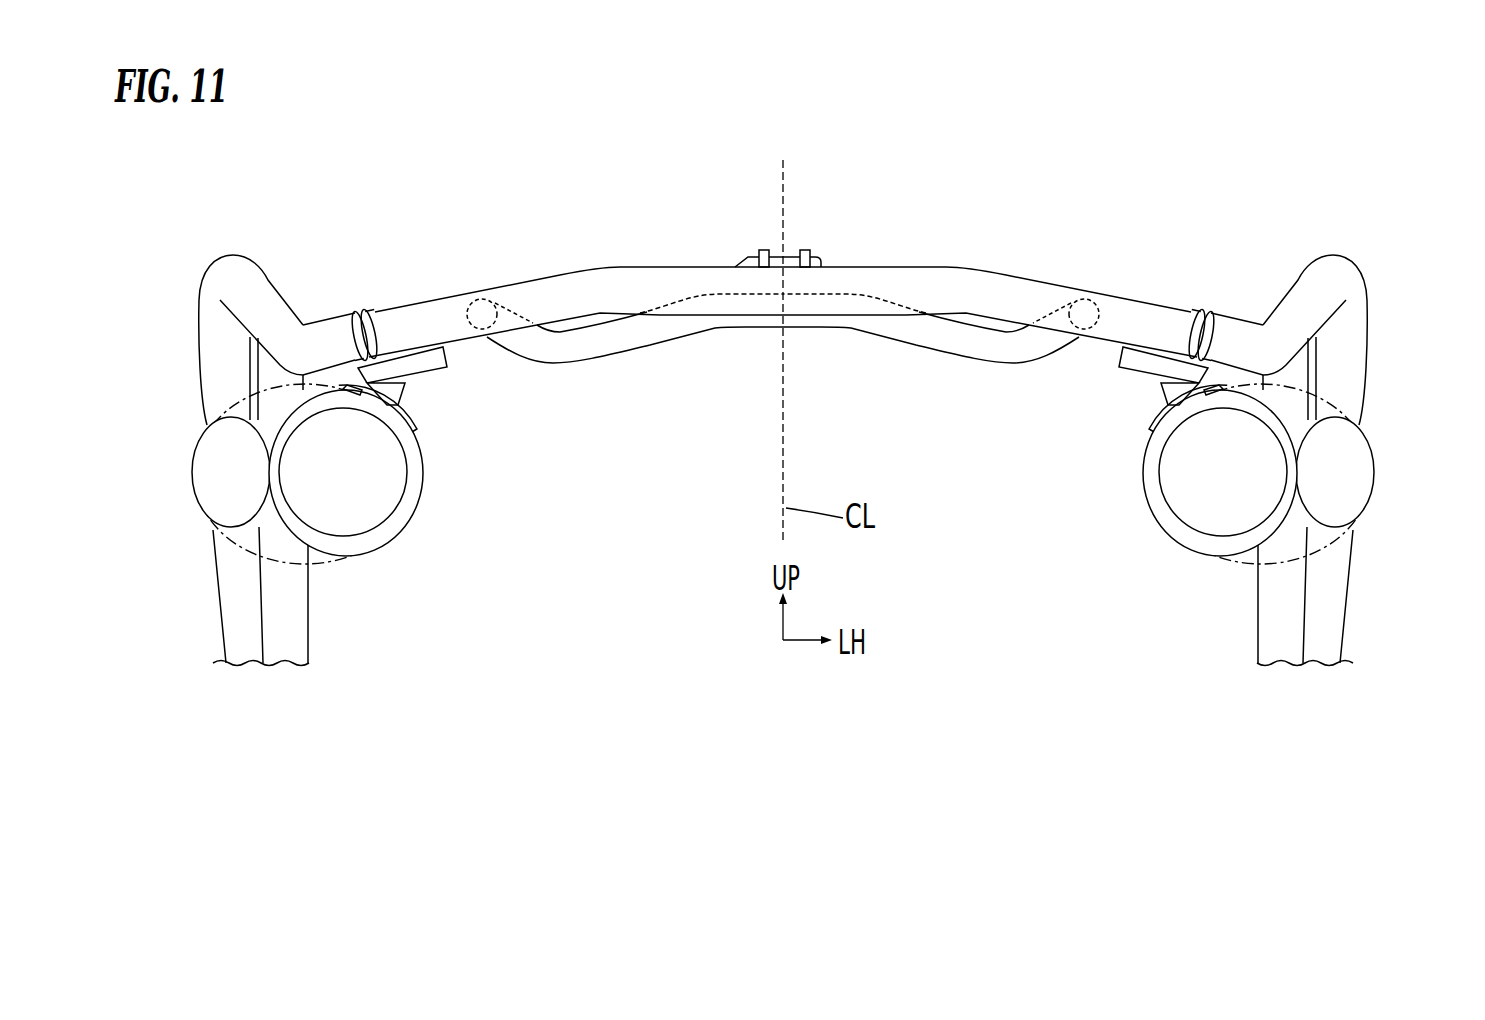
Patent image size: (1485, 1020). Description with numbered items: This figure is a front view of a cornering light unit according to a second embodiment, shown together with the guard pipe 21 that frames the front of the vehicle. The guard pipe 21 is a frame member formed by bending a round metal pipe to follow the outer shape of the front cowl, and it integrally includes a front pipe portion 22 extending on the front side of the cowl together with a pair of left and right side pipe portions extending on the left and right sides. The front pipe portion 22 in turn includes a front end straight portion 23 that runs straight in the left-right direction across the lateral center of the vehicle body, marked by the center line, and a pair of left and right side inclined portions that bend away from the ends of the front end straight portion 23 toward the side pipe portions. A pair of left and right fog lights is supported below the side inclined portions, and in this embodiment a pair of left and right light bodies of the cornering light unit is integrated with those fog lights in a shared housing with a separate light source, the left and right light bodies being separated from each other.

The guard pipe 21 is at (1353, 249).
The front pipe portion 22 is at (783, 246).
The front end straight portion 23 is at (878, 277).